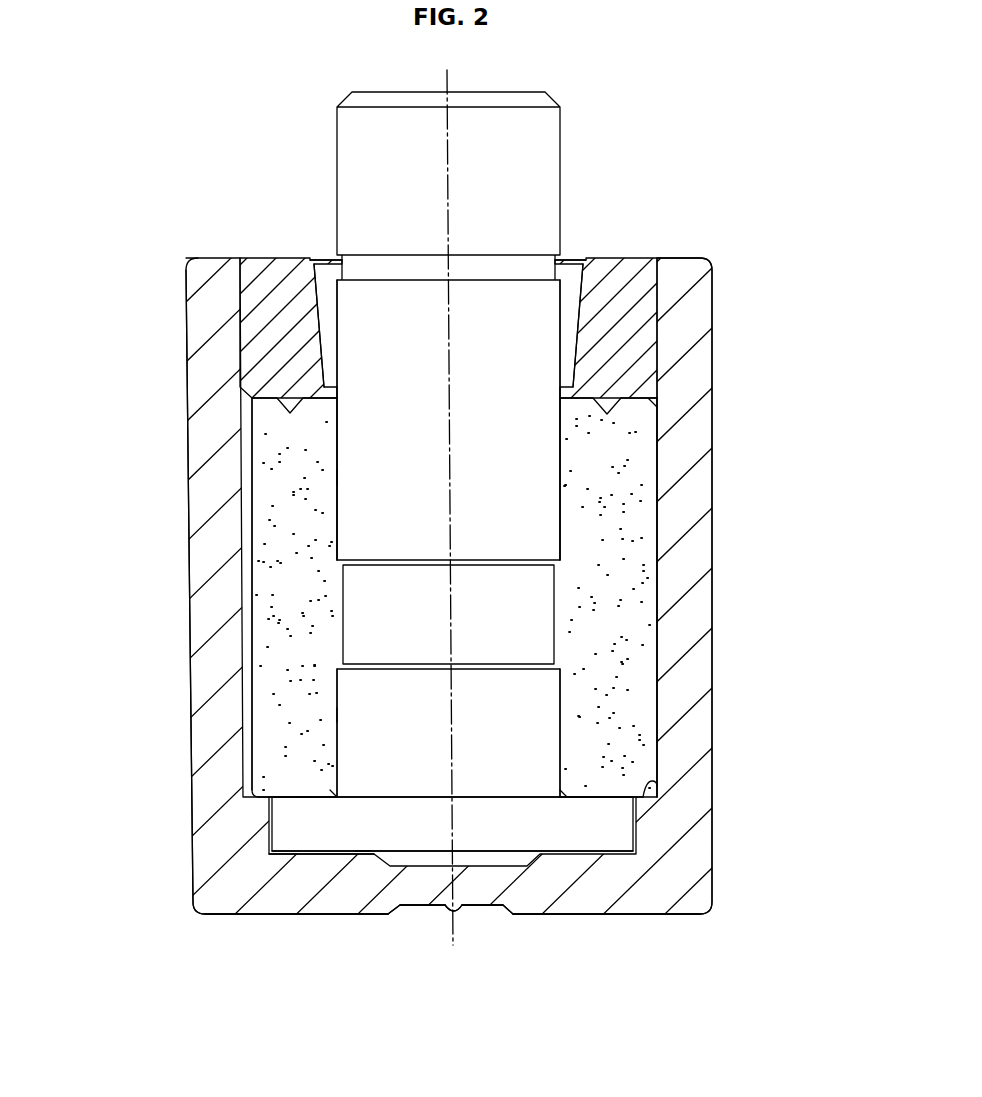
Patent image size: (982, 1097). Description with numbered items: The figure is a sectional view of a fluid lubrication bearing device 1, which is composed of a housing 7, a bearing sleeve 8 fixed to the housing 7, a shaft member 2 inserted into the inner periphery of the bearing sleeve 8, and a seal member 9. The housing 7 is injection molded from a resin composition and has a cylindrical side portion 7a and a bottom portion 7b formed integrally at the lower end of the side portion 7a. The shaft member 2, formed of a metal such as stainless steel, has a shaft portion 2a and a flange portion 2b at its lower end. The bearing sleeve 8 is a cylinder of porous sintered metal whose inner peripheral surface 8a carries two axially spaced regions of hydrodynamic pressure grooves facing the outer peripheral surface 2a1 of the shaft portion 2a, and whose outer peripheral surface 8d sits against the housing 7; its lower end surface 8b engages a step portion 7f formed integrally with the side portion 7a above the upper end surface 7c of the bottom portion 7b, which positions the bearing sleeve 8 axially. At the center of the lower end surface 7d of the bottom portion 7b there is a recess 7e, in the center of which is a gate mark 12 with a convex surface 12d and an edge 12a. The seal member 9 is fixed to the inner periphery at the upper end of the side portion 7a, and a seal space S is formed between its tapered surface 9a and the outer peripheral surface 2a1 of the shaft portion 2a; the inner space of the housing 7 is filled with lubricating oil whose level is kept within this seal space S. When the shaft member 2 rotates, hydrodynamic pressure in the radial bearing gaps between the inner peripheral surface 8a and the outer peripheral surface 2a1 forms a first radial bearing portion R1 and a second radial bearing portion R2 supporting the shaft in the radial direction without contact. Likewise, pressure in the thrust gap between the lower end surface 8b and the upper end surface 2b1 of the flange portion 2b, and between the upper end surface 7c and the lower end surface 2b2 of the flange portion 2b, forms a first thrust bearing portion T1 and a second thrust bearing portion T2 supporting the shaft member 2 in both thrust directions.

The fluid lubrication bearing device 1 is at (728, 139).
The shaft member 2 is at (562, 84).
The shaft portion 2a is at (543, 335).
The outer peripheral surface 2a1 is at (567, 717).
The flange portion 2b is at (610, 832).
The upper end surface 2b1 is at (603, 797).
The lower end surface 2b2 is at (618, 852).
The housing 7 is at (724, 277).
The side portion 7a is at (685, 627).
The bottom portion 7b is at (537, 902).
The upper end surface 7c is at (322, 852).
The lower end surface 7d is at (337, 915).
The recess 7e is at (490, 905).
The step portion 7f is at (648, 782).
The bearing sleeve 8 is at (636, 468).
The inner peripheral surface 8a is at (615, 513).
The lower end surface 8b is at (293, 798).
The outer peripheral surface of bearing sleeve 8d is at (655, 697).
The seal member 9 is at (643, 352).
The tapered surface 9a is at (578, 290).
The gate mark 12 is at (454, 927).
The chamfered edge of through hole 12a is at (443, 907).
The convex surface 12d is at (463, 912).
The seal space S is at (327, 277).
The first radial bearing portion R1 is at (348, 474).
The second radial bearing portion R2 is at (350, 712).
The first thrust bearing portion T1 is at (304, 811).
The second thrust bearing portion T2 is at (365, 836).